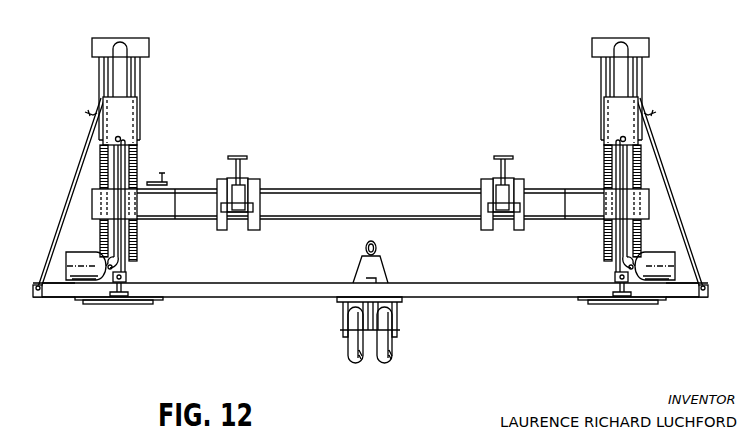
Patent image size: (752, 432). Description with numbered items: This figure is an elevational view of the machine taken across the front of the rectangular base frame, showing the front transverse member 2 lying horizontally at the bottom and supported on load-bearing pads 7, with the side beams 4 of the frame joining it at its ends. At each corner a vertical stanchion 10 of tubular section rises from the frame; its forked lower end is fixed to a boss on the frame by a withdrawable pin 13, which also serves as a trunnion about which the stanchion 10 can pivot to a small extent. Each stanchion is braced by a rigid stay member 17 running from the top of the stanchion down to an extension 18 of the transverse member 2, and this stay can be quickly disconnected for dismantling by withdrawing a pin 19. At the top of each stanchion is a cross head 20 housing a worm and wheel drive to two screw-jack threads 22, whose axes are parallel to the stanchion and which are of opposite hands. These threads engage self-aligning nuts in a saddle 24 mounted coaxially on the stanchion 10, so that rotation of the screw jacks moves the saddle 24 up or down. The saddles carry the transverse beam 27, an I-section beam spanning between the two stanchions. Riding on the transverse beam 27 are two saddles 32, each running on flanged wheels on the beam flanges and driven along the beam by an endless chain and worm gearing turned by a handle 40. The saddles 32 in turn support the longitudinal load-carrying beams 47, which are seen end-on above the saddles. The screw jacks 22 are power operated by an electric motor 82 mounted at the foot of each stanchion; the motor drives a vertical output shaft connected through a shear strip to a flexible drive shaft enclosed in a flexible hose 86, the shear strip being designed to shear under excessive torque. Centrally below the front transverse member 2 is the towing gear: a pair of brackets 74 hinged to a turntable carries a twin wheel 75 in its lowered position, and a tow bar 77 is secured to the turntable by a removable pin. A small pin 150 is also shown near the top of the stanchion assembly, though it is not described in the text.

The front transverse member 2 is at (498, 297).
The side beams 4 is at (134, 297).
The load-bearing pads 7 is at (101, 305).
The vertical stanchion 10 is at (123, 172).
The withdrawable pin 13 is at (123, 276).
The rigid stay members 17 is at (84, 152).
The extension 18 is at (63, 292).
The pin 19 is at (36, 298).
The cross head 20 is at (134, 42).
The screw-jack threads 22 is at (101, 235).
The saddle 24 is at (96, 200).
The transverse beams 27 is at (363, 206).
The saddles 32 is at (253, 188).
The handle 40 is at (164, 177).
The longitudinal load-carrying beams 47 is at (238, 156).
The brackets 74 is at (394, 318).
The twin wheel 75 is at (359, 366).
The tow bar 77 is at (381, 262).
The electric motors 82 is at (73, 263).
The flexible hose 86 is at (117, 208).
The pin 150 is at (121, 138).